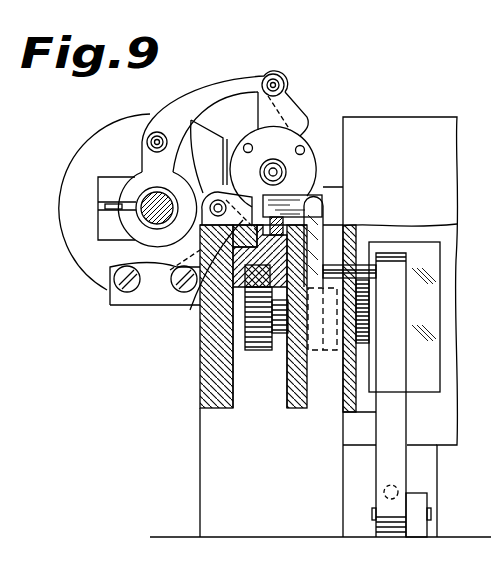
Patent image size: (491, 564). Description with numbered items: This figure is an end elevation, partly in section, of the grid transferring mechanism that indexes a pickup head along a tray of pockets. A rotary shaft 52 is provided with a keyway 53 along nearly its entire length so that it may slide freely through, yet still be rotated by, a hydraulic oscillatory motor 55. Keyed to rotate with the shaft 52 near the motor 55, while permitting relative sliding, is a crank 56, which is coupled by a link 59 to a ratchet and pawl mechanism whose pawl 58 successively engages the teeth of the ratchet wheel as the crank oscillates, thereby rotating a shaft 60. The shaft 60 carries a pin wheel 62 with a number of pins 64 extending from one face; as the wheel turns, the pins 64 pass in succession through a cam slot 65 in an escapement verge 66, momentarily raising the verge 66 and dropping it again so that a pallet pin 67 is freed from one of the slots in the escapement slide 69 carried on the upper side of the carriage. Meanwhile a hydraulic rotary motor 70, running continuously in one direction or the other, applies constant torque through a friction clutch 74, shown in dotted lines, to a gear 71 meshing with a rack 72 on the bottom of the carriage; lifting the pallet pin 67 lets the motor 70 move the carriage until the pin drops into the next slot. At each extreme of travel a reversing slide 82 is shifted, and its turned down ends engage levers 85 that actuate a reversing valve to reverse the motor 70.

The rotary shaft 52 is at (145, 218).
The keyway 53 is at (152, 190).
The hydraulic oscillatory motor 55 is at (75, 237).
The crank 56 is at (150, 162).
The pawl 58 is at (298, 110).
The link 59 is at (233, 78).
The shaft 60 is at (267, 176).
The pin wheel 62 is at (307, 155).
The pin 64 is at (246, 143).
The cam slot 65 is at (216, 194).
The escapement verge 66 is at (191, 158).
The pallet pin 67 is at (170, 271).
The escapement slide 69 is at (205, 311).
The hydraulic rotary motor 70 is at (432, 320).
The gear 71 is at (252, 352).
The rack 72 is at (215, 330).
The friction clutch 74 is at (330, 350).
The reversing slide 82 is at (323, 198).
The lever 85 is at (360, 266).